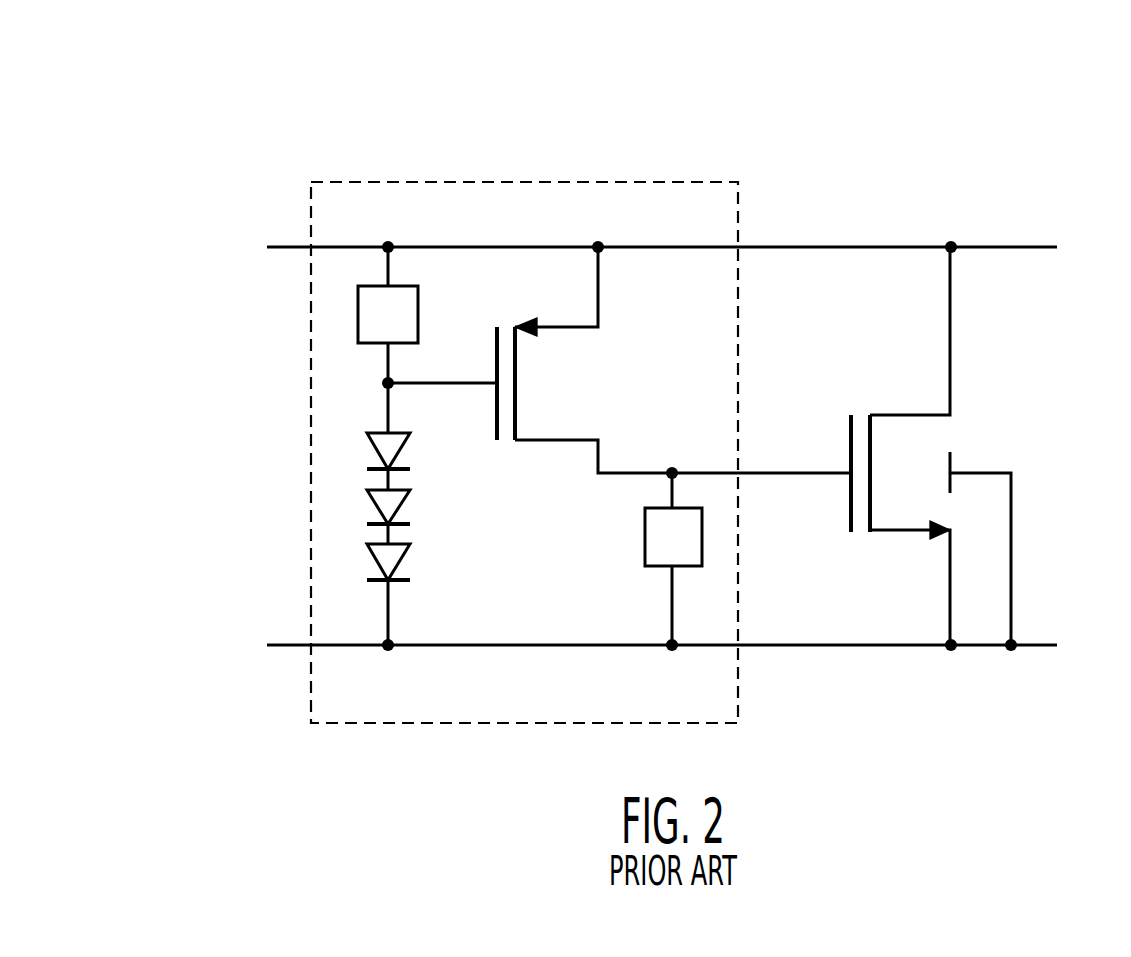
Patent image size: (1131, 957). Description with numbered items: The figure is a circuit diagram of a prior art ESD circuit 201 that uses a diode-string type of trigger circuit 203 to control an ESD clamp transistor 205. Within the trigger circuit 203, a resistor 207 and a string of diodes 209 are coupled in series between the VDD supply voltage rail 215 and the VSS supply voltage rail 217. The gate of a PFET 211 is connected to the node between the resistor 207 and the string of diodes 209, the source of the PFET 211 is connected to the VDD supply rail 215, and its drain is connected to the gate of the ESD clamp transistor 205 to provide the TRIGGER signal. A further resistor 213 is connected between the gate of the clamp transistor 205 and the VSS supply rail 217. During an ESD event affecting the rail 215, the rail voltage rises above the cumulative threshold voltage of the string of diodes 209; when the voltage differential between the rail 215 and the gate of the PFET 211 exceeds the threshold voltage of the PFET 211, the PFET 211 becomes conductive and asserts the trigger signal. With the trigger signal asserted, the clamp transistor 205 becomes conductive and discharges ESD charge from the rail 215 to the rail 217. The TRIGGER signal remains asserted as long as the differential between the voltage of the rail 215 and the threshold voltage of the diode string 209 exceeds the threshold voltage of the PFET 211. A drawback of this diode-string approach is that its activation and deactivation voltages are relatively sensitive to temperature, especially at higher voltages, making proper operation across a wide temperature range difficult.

The ESD circuit 201 is at (183, 128).
The trigger circuit 203 is at (635, 180).
The ESD clamp transistor 205 is at (870, 455).
The resistor 207 is at (418, 320).
The string of diodes 209 is at (405, 500).
The PFET 211 is at (515, 385).
The resistor 213 is at (643, 538).
The VDD supply voltage rail 215 is at (926, 246).
The VSS supply voltage rail 217 is at (926, 644).